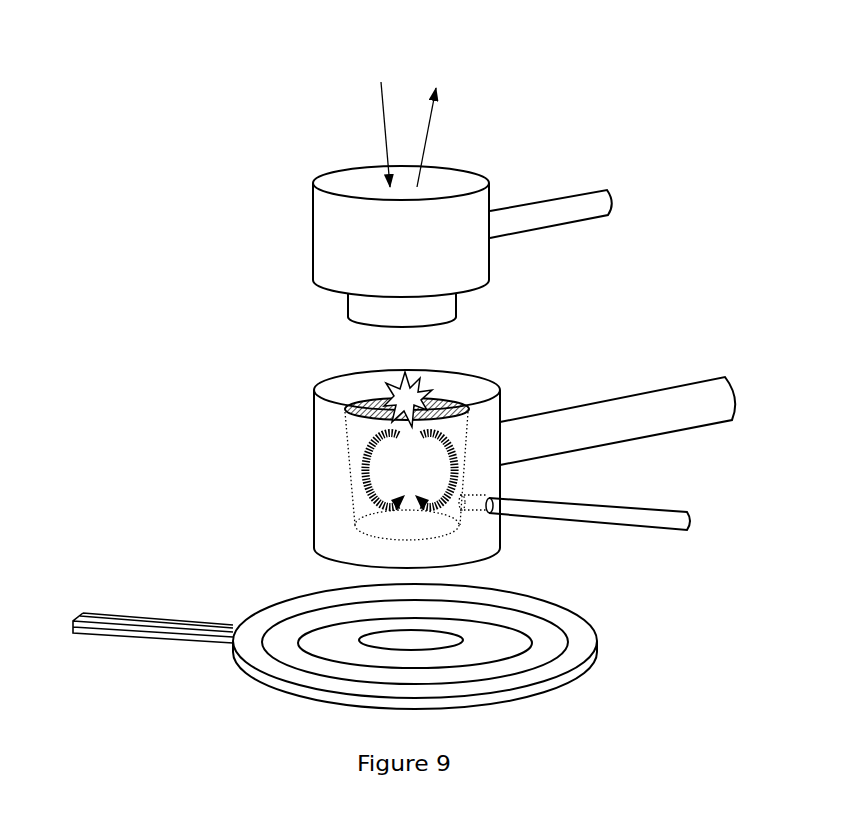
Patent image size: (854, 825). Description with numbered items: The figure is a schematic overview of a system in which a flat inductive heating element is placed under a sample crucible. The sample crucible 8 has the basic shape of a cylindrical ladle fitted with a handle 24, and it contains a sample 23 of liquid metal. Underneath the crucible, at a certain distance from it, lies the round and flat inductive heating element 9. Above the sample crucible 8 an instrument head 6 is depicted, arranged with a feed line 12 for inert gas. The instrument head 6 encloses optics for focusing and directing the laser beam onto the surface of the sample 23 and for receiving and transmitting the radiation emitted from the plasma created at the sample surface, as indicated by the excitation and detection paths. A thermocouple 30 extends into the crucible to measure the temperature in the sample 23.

The instrument head 6 is at (457, 220).
The feed line 12 is at (635, 190).
The sample crucible 8 is at (474, 388).
The sample 23 is at (373, 409).
The handle 24 is at (642, 410).
The thermocouple 30 is at (698, 520).
The inductive heating element 9 is at (587, 641).